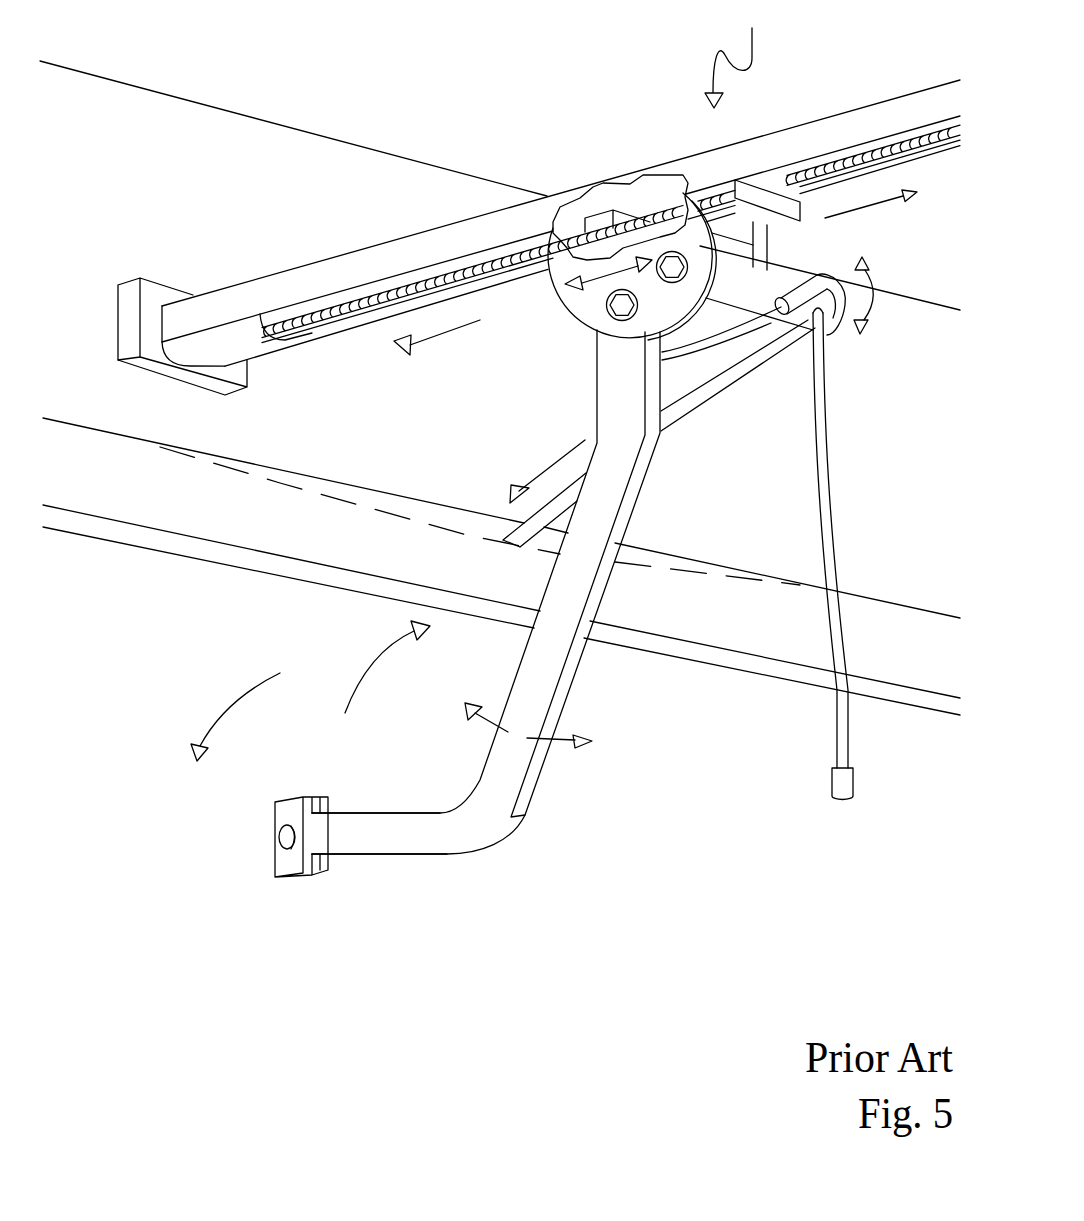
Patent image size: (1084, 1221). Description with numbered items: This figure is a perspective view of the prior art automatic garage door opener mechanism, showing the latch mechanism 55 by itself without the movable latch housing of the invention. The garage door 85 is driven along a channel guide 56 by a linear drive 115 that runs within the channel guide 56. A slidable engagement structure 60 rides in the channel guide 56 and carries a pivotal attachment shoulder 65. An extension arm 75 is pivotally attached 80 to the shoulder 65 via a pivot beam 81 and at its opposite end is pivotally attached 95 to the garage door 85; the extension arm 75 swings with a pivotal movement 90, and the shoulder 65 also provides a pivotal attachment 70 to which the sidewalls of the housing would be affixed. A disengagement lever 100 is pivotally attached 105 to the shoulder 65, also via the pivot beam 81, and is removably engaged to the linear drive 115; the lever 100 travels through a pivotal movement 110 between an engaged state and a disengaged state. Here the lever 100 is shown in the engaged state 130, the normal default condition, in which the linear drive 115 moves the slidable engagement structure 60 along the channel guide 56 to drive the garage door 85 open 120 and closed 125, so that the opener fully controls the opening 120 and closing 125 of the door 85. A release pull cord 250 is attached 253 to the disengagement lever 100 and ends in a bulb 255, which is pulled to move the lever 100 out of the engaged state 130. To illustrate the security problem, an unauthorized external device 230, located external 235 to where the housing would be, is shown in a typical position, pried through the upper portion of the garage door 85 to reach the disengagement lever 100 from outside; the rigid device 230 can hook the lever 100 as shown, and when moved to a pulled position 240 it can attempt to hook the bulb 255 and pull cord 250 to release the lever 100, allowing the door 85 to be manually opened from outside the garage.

The latch mechanism 55 is at (734, 54).
The channel guide 56 is at (832, 115).
The slidable engagement structure 60 is at (715, 195).
The pivotal attachment shoulder 65 is at (657, 242).
The pivotal attachment of the shoulder 70 is at (612, 310).
The extension arm 75 is at (525, 796).
The pivotal attachment of extension arm to shoulder 80 is at (632, 266).
The pivot beam 81 is at (673, 280).
The garage door 85 is at (100, 689).
The pivotal movement of extension arm 90 is at (483, 722).
The pivotal attachment of extension arm to door 95 is at (281, 838).
The disengagement lever 100 is at (831, 338).
The pivotal attachment of disengagement lever to shoulder 105 is at (721, 333).
The pivotal movement of disengagement lever 110 is at (875, 306).
The linear drive 115 is at (930, 143).
The opening movement 120 is at (870, 210).
The closing movement 125 is at (437, 335).
The engaged state 130 is at (603, 228).
The unauthorized external device 230 is at (672, 415).
The external location 235 is at (162, 630).
The pulled position 240 is at (545, 473).
The release pull cord 250 is at (848, 737).
The attachment of pull cord to lever 253 is at (820, 313).
The bulb 255 is at (855, 783).